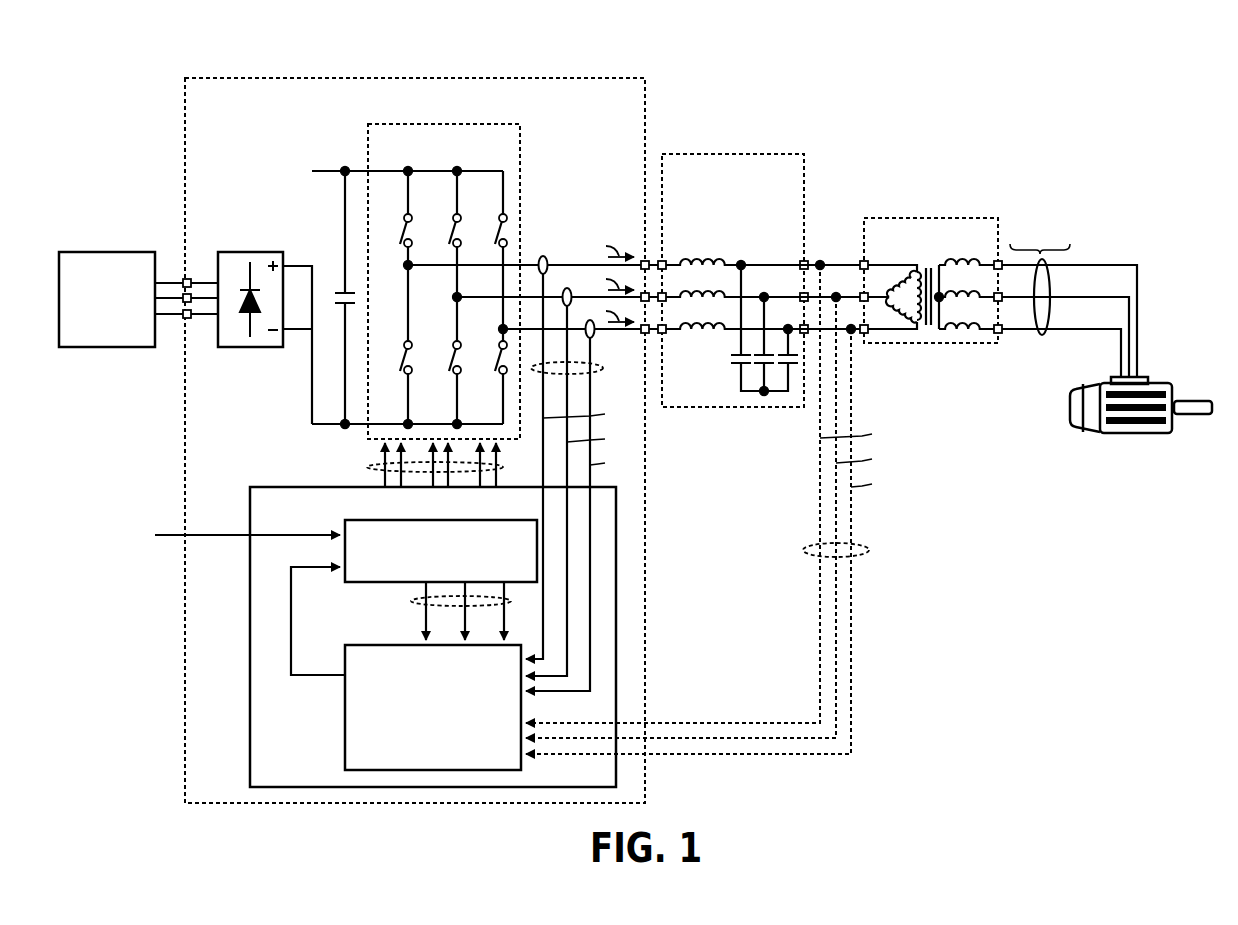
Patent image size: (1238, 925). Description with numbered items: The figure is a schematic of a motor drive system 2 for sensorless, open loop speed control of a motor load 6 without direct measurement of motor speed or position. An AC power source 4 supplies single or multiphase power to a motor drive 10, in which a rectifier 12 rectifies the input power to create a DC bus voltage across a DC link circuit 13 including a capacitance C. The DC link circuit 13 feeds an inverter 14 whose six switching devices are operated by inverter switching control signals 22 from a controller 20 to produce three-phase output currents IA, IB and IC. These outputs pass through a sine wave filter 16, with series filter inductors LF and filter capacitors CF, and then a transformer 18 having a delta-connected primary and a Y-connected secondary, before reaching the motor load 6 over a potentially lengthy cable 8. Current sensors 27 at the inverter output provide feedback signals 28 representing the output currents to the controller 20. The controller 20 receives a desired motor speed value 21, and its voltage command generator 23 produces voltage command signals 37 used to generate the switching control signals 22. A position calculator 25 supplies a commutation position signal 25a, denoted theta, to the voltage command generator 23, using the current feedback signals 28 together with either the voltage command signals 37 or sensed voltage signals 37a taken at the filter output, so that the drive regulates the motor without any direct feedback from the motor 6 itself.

The motor drive system 2 is at (112, 48).
The AC power source 4 is at (104, 252).
The motor load 6 is at (1070, 408).
The cable 8 is at (1036, 334).
The motor drive 10 is at (220, 78).
The rectifier 12 is at (248, 252).
The DC link circuit 13 is at (322, 138).
The inverter 14 is at (442, 124).
The sine wave filter 16 is at (732, 154).
The transformer 18 is at (932, 218).
The controller 20 is at (250, 514).
The desired motor speed value 21 is at (170, 532).
The inverter switching control signals 22 is at (369, 467).
The voltage command generator 23 is at (426, 520).
The position calculator 25 is at (388, 645).
The commutation position signal 25a is at (291, 627).
The current sensors 27 is at (572, 250).
The current feedback signals 28 is at (602, 368).
The voltage command signals 37 is at (411, 601).
The sensed voltage signals 37a is at (869, 550).